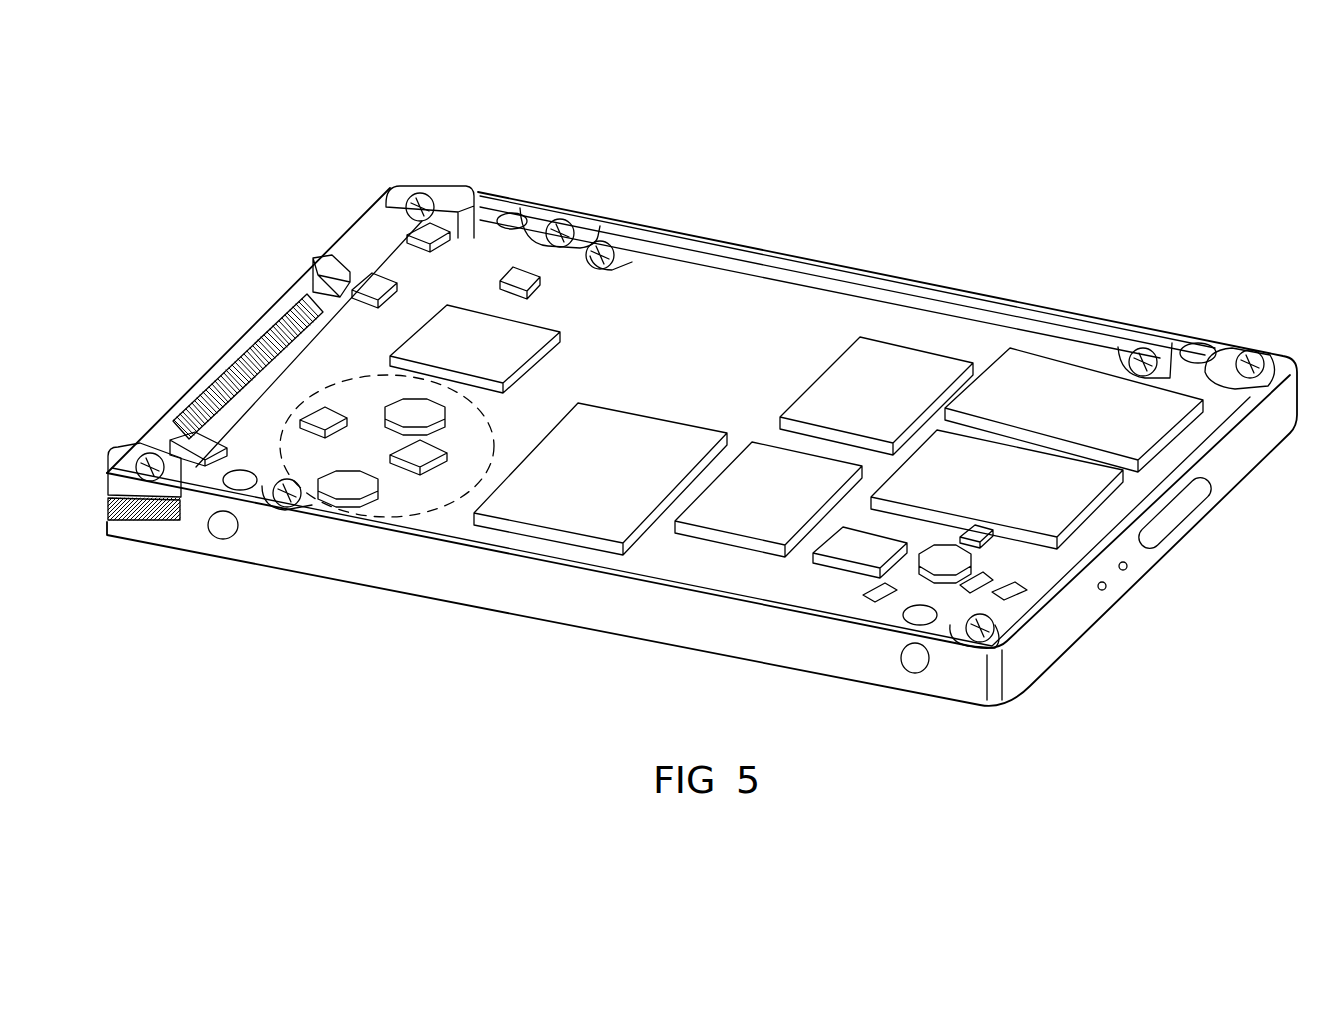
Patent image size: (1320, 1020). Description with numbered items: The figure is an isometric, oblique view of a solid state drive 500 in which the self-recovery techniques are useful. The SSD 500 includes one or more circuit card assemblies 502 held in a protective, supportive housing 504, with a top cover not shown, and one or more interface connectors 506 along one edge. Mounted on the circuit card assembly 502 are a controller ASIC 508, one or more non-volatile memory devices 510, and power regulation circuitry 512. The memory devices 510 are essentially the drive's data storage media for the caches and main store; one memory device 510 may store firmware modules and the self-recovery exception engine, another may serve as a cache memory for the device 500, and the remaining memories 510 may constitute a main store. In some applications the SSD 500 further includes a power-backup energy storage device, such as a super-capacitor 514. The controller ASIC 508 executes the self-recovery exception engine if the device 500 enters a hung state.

The solid state drive 500 is at (930, 207).
The circuit card assembly 502 is at (795, 297).
The housing 504 is at (437, 593).
The interface connector 506 is at (280, 318).
The controller ASIC 508 is at (457, 345).
The non-volatile memory device 510 is at (1097, 408).
The power regulation circuitry 512 is at (356, 525).
The super-capacitor 514 is at (608, 480).